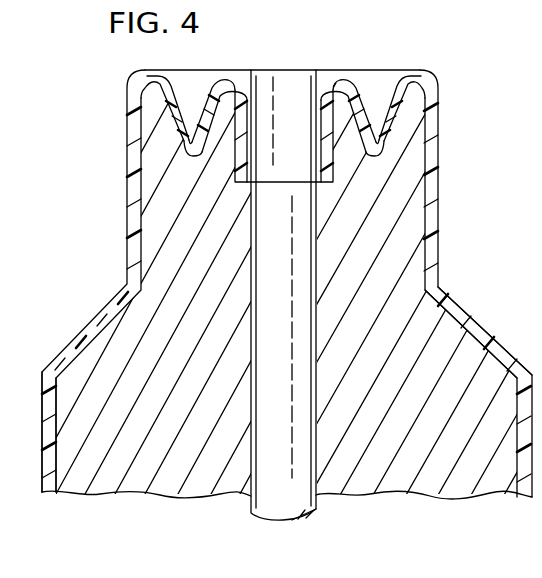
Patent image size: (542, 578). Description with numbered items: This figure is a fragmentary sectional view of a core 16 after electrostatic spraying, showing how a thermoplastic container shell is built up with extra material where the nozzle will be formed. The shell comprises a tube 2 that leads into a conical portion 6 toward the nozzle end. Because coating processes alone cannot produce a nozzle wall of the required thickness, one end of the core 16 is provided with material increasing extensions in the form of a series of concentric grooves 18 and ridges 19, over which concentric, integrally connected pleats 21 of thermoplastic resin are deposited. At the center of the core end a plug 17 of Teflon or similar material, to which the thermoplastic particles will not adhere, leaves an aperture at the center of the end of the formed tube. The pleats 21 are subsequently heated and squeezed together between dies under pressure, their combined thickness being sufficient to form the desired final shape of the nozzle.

The tube 2 is at (46, 398).
The conical portion 6 is at (484, 340).
The core 16 is at (164, 482).
The plug 17 is at (292, 196).
The grooves 18 is at (180, 146).
The ridges 19 is at (150, 84).
The pleats 21 is at (191, 128).